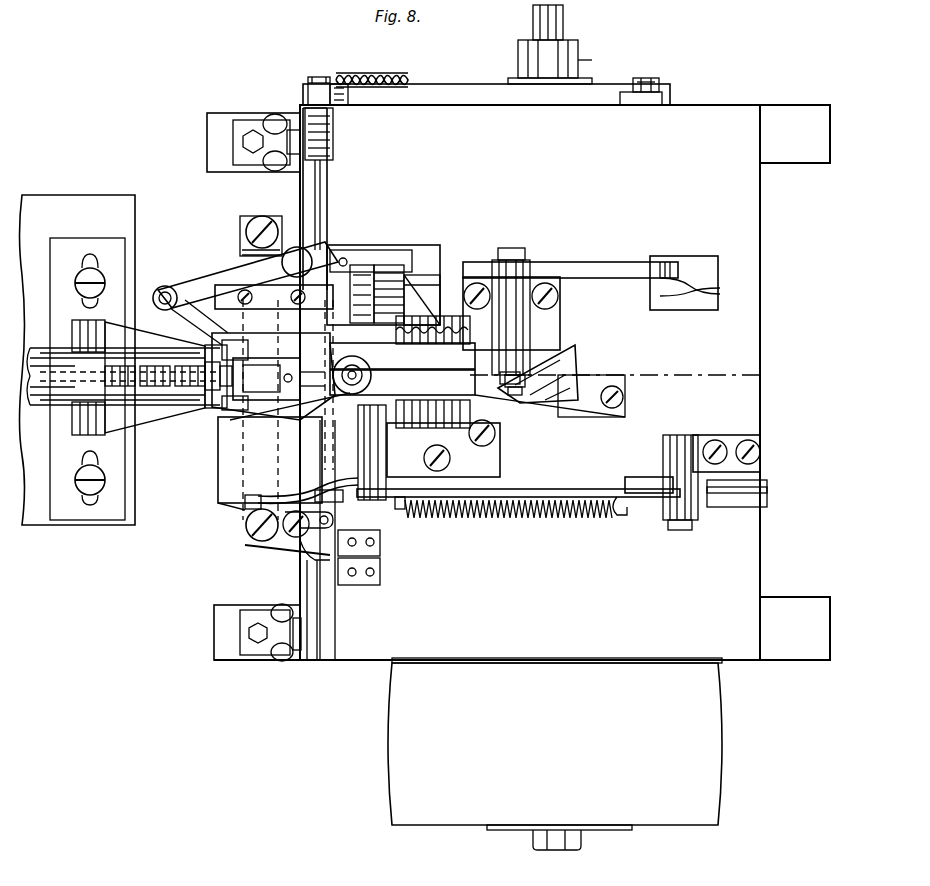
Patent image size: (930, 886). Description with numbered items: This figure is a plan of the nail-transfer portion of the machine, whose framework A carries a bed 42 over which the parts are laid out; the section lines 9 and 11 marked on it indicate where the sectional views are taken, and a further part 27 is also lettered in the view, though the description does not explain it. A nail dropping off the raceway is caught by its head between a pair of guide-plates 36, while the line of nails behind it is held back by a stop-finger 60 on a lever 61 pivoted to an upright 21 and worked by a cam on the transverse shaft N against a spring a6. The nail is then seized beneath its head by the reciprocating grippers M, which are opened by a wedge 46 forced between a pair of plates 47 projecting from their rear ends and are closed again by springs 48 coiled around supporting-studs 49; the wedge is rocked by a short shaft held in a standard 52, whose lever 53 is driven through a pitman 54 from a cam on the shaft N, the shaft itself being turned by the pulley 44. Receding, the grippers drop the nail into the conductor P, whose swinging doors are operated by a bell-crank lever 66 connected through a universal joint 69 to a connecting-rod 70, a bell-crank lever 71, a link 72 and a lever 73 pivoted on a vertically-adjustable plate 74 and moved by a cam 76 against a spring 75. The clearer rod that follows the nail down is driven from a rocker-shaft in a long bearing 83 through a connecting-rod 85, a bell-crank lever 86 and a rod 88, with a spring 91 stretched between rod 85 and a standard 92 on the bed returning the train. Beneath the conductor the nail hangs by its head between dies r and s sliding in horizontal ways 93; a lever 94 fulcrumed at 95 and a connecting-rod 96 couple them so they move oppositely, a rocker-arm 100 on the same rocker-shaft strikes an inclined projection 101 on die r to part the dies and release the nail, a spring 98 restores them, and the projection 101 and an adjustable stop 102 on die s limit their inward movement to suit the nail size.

The section line 9 9 is at (62, 440).
The section line 11 11 is at (762, 375).
The upright 21 is at (400, 290).
The adjusting nut 27 is at (362, 294).
The guide-plates 36 is at (226, 352).
The bed 42 is at (591, 555).
The pulley 44 is at (555, 756).
The wedge 46 is at (578, 360).
The plates 47 is at (477, 380).
The springs 48 is at (433, 373).
The supporting-studs 49 is at (462, 314).
The standard 52 is at (511, 321).
The lever 53 is at (600, 265).
The pitman 54 is at (705, 290).
The stop-finger 60 is at (185, 424).
The lever 61 is at (382, 292).
The bell-crank lever 66 is at (245, 293).
The universal joint 69 is at (310, 258).
The connecting-rod 70 is at (307, 196).
The bell-crank lever 71 is at (318, 128).
The link 72 is at (307, 100).
The lever 73 is at (470, 92).
The vertically-adjustable plate 74 is at (655, 100).
The spring 75 is at (402, 76).
The cam 76 is at (575, 78).
The long bearing 83 is at (364, 448).
The connecting-rod 85 is at (535, 490).
The bell-crank lever 86 is at (640, 480).
The rod 88 is at (768, 490).
The spring 91 is at (523, 514).
The standard 92 is at (620, 508).
The horizontal ways 93 is at (320, 498).
The lever 94 is at (288, 540).
The fulcrum 95 is at (300, 545).
The connecting-rod 96 is at (272, 224).
The spring 98 is at (258, 546).
The rocker-arm 100 is at (330, 486).
The inclined projection 101 is at (250, 510).
The adjustable stop 102 is at (248, 250).
The framework A is at (795, 628).
The grippers M is at (262, 410).
The transverse shaft N is at (563, 25).
The conductor P is at (279, 379).
The spring a6 is at (385, 250).
The die r is at (258, 466).
The die s is at (240, 258).